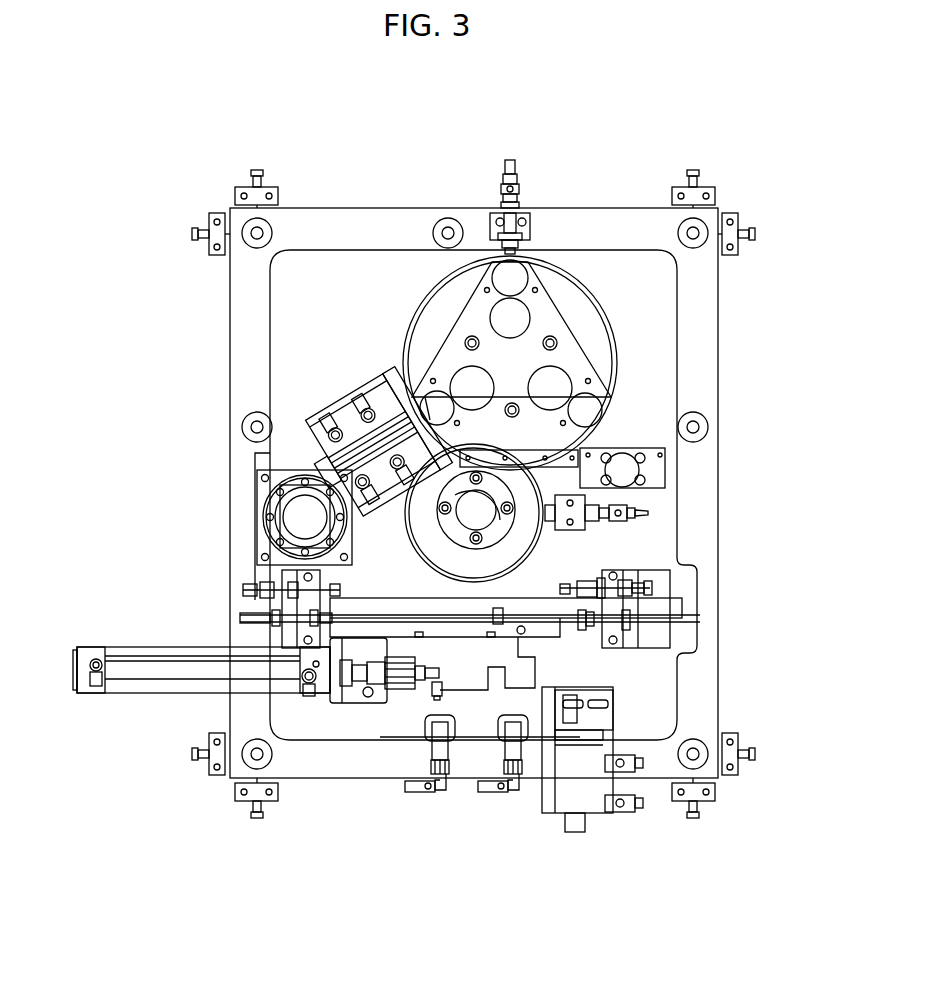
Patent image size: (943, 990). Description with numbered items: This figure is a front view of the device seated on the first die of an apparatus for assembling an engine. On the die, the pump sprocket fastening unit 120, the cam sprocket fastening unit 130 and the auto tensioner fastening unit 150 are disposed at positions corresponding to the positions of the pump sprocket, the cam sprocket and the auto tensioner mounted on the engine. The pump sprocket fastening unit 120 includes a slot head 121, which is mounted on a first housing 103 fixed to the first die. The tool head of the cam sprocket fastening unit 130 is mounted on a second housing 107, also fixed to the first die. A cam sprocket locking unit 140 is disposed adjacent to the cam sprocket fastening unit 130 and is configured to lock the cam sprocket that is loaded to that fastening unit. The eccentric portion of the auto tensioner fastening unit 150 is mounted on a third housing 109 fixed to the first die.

The first housing 103 is at (660, 352).
The second housing 107 is at (607, 321).
The cam sprocket fastening unit 130 is at (446, 330).
The cam sprocket locking unit 140 is at (300, 405).
The pump sprocket fastening unit 120 is at (268, 520).
The slot head 121 is at (272, 491).
The auto tensioner fastening unit 150 is at (527, 499).
The third housing 109 is at (552, 545).